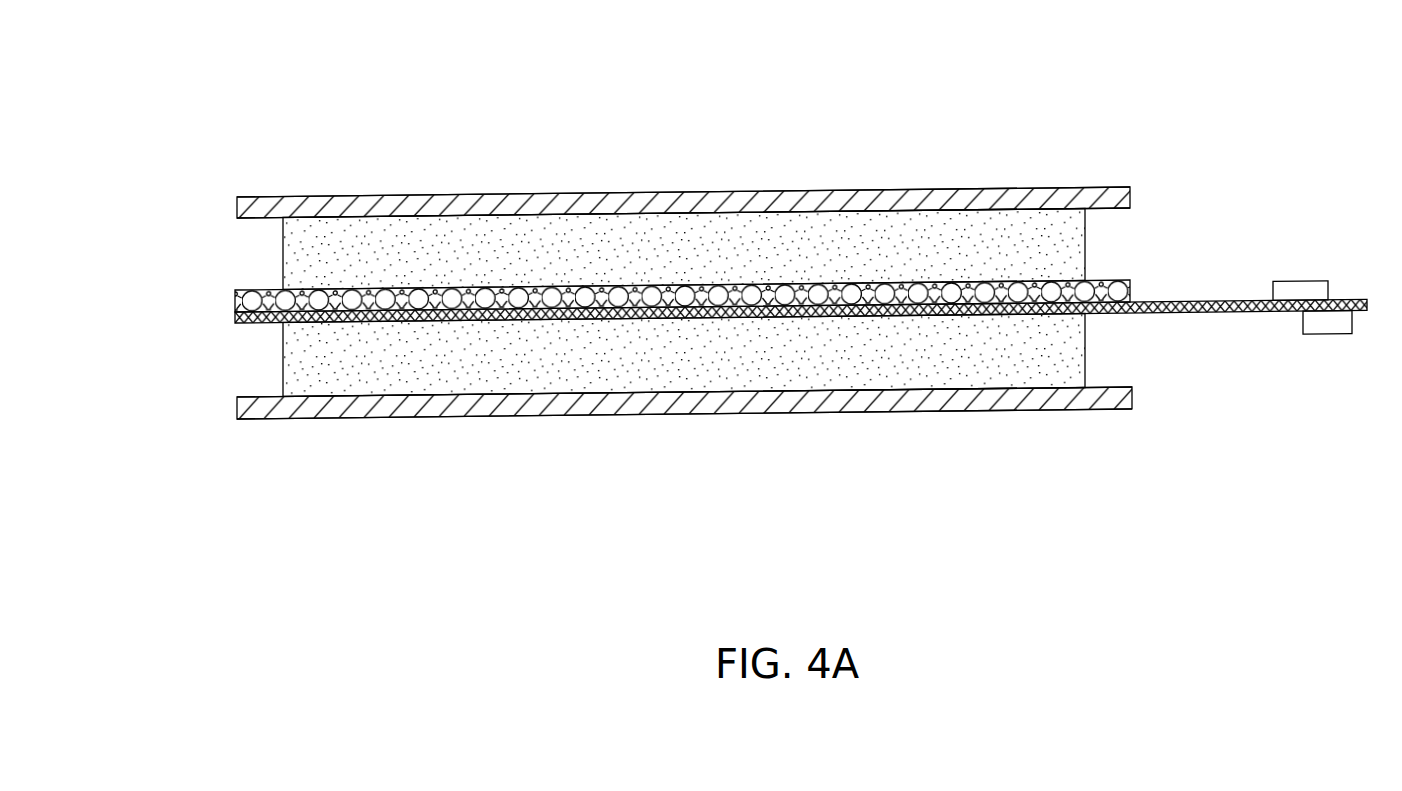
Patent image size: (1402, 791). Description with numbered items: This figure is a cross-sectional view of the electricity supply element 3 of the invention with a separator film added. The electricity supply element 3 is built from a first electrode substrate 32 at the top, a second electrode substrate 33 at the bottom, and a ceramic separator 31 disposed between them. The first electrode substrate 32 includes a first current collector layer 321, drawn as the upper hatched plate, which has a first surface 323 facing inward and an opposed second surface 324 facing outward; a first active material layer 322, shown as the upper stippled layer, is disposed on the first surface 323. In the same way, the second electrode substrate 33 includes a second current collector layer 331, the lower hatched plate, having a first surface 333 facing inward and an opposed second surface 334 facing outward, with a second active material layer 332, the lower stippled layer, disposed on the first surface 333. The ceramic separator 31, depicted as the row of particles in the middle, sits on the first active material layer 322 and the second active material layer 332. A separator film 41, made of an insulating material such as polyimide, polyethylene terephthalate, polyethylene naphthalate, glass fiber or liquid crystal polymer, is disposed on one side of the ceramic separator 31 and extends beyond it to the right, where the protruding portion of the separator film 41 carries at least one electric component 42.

The electricity supply element 3 is at (293, 102).
The ceramic separator 31 is at (235, 298).
The first electrode substrate 32 is at (1242, 165).
The first current collector layer 321 is at (1130, 195).
The first active material layer 322 is at (1085, 257).
The first surface 323 is at (256, 219).
The second surface 324 is at (252, 197).
The second electrode substrate 33 is at (1263, 323).
The second current collector layer 331 is at (1132, 397).
The second active material layer 332 is at (1085, 352).
The first surface 333 is at (253, 397).
The second surface 334 is at (259, 419).
The separator film 41 is at (235, 320).
The electric component 42 is at (1302, 280).